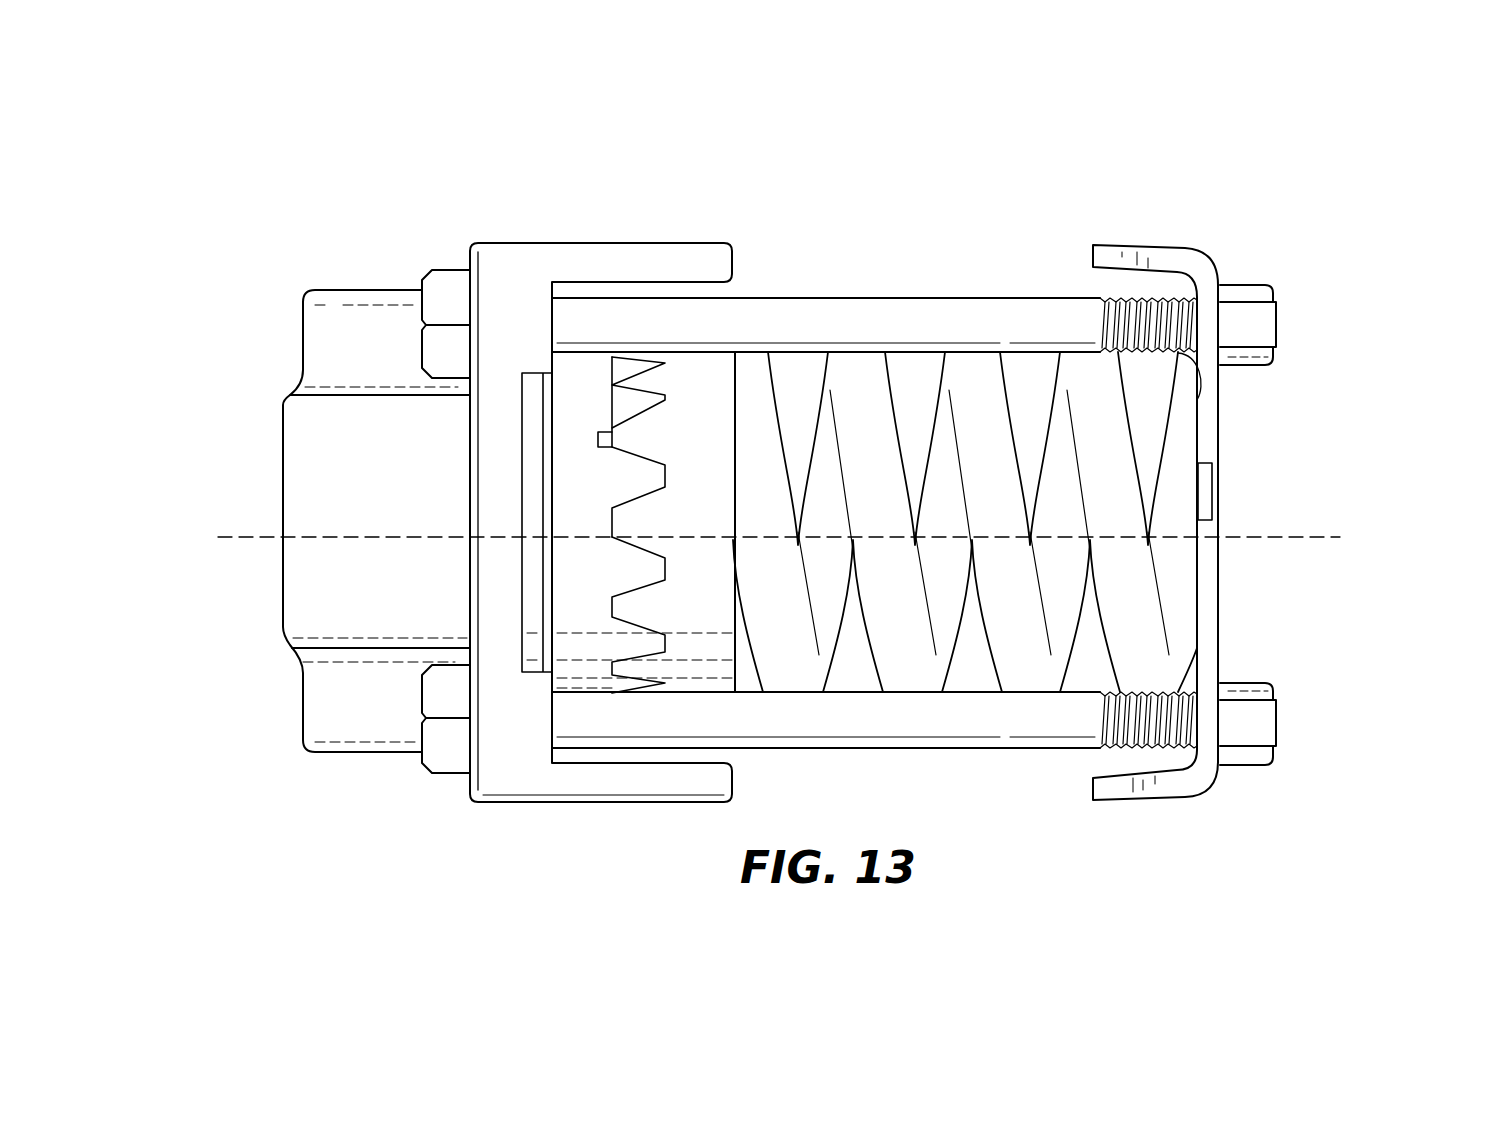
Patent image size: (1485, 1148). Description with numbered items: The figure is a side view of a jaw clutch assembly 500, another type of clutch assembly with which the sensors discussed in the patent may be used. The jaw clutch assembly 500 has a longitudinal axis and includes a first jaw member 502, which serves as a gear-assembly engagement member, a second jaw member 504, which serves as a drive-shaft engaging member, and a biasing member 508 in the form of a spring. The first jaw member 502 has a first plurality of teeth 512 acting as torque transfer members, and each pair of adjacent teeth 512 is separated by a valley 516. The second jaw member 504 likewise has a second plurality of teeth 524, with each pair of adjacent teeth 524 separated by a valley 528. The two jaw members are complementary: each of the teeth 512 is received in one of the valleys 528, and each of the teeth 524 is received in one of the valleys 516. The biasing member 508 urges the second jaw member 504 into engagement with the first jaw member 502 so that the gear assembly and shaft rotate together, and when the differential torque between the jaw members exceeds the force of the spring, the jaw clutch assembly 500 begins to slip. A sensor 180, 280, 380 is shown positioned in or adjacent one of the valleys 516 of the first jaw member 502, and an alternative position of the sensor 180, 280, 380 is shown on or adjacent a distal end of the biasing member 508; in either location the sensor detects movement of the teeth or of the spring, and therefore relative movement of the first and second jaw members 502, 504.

The jaw clutch assembly 500 is at (210, 206).
The first jaw member 502 is at (575, 407).
The second jaw member 504 is at (713, 380).
The biasing member 508 is at (863, 400).
The first plurality of teeth 512 is at (623, 563).
The valley 516 is at (612, 372).
The second plurality of teeth 524 is at (665, 485).
The valley 528 is at (638, 520).
The sensor 180 is at (782, 484).
The sensor 280 is at (782, 484).
The sensor 380 is at (597, 448).